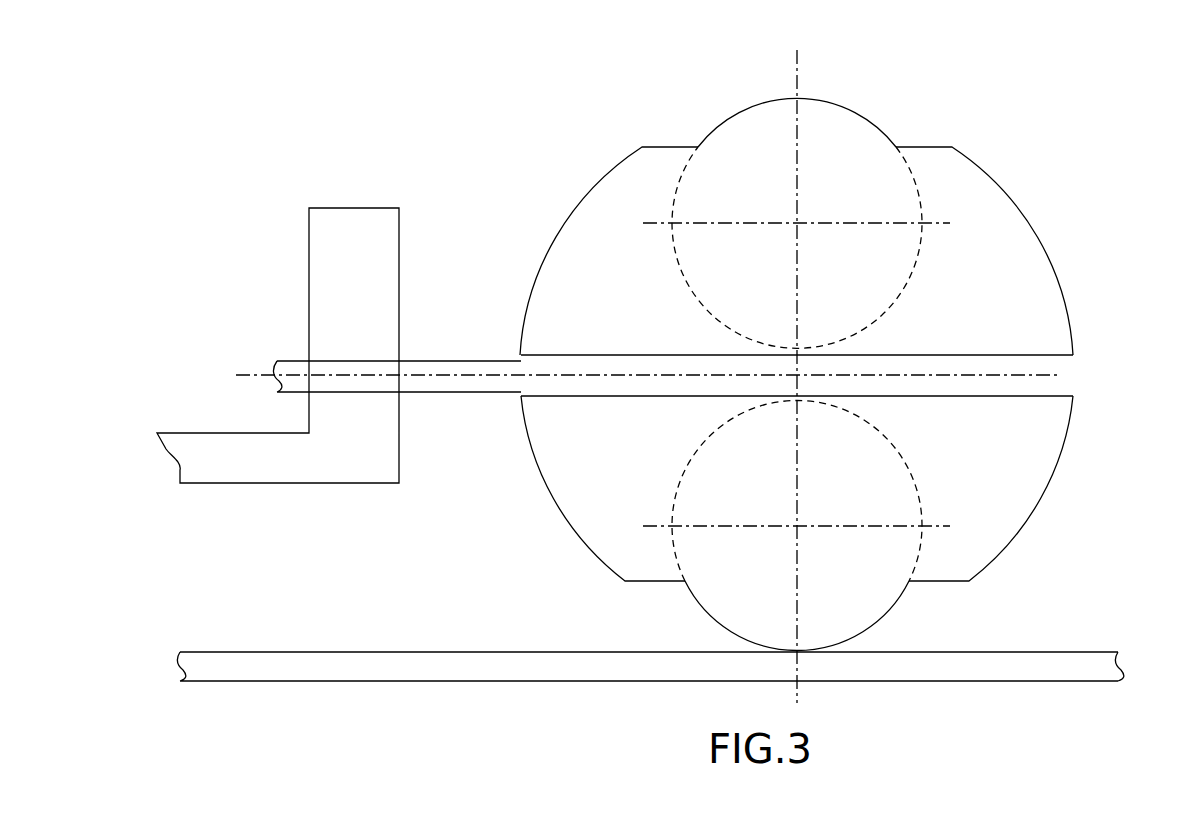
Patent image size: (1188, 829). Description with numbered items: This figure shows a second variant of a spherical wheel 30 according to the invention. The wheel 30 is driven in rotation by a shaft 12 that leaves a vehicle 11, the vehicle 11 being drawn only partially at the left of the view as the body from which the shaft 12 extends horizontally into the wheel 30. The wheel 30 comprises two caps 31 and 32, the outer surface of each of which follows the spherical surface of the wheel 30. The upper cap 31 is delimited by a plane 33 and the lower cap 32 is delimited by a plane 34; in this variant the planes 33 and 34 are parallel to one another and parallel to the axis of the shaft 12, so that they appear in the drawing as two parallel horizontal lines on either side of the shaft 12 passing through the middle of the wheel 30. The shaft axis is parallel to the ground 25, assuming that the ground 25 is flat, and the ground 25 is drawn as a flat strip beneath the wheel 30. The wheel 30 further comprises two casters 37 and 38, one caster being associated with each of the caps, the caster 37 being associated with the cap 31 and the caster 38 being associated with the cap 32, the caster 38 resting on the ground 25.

The vehicle 11 is at (345, 222).
The shaft 12 is at (431, 360).
The ground 25 is at (1085, 651).
The spherical wheel 30 is at (836, 377).
The cap 31 is at (1053, 260).
The cap 32 is at (1053, 473).
The plane 33 is at (1046, 355).
The plane 34 is at (1047, 396).
The caster 37 is at (856, 110).
The caster 38 is at (870, 630).